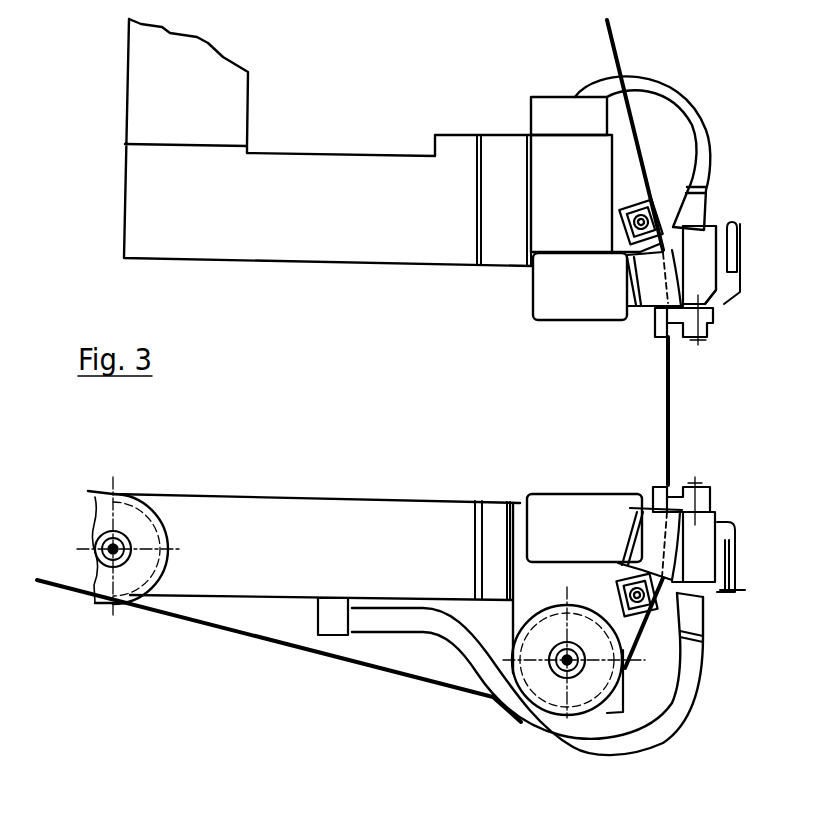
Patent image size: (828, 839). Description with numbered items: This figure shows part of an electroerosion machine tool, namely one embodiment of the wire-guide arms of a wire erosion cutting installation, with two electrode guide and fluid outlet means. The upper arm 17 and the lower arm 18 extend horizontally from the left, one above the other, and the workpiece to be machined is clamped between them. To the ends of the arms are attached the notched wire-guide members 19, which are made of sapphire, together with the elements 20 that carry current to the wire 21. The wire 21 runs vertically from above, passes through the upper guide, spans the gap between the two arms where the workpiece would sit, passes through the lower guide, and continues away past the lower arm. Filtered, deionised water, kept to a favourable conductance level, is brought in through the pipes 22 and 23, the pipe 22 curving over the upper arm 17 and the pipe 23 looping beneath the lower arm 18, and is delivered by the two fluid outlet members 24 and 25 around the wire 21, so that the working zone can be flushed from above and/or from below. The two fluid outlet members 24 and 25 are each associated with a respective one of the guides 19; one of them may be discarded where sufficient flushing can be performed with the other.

The upper arm 17 is at (242, 222).
The lower arm 18 is at (398, 532).
The notched wire-guide member 19 is at (657, 535).
The current-carrying element 20 is at (657, 217).
The wire 21 is at (616, 42).
The pipe 22 is at (690, 116).
The pipe 23 is at (688, 688).
The fluid outlet member 24 is at (704, 278).
The fluid outlet member 25 is at (698, 534).